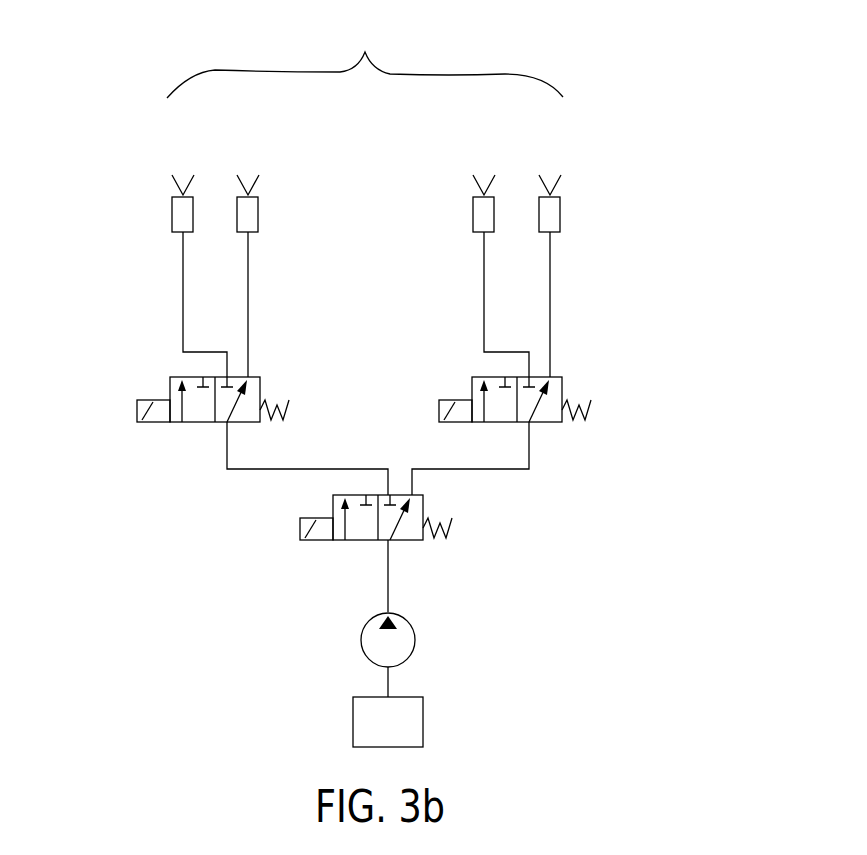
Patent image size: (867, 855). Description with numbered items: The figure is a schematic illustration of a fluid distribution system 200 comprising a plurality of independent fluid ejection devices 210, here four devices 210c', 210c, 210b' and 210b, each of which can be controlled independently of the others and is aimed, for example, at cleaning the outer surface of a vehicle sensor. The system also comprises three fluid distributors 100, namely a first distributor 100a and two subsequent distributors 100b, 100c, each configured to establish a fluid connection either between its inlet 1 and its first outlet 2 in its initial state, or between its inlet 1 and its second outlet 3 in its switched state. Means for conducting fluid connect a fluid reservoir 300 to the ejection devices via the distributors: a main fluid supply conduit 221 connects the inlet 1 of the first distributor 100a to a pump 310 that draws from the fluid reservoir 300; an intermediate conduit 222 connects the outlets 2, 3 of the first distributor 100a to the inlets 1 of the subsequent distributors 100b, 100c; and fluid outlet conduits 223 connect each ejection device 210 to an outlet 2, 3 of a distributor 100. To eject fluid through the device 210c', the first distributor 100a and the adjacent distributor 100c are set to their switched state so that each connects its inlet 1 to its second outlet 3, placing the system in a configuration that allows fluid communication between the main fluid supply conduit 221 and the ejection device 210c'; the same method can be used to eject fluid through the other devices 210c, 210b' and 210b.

The inlet 1 is at (213, 438).
The first outlet 2 is at (577, 367).
The second outlet 3 is at (464, 364).
The fluid distributor 100 is at (108, 522).
The first distributor 100a is at (470, 534).
The subsequent distributor 100b is at (602, 424).
The second adjacent distributor 100c is at (117, 437).
The distribution system 200 is at (615, 93).
The fluid ejection devices 210 is at (365, 61).
The fluid ejection device 210b is at (538, 165).
The fluid ejection device 210b' is at (471, 165).
The fluid ejection device 210c is at (263, 165).
The fluid ejection device 210c' is at (200, 165).
The main fluid supply conduit 221 is at (387, 587).
The intermediate conduit 222 is at (418, 469).
The fluid outlet conduits 223 is at (183, 323).
The fluid reservoir 300 is at (353, 727).
The pump 310 is at (414, 650).